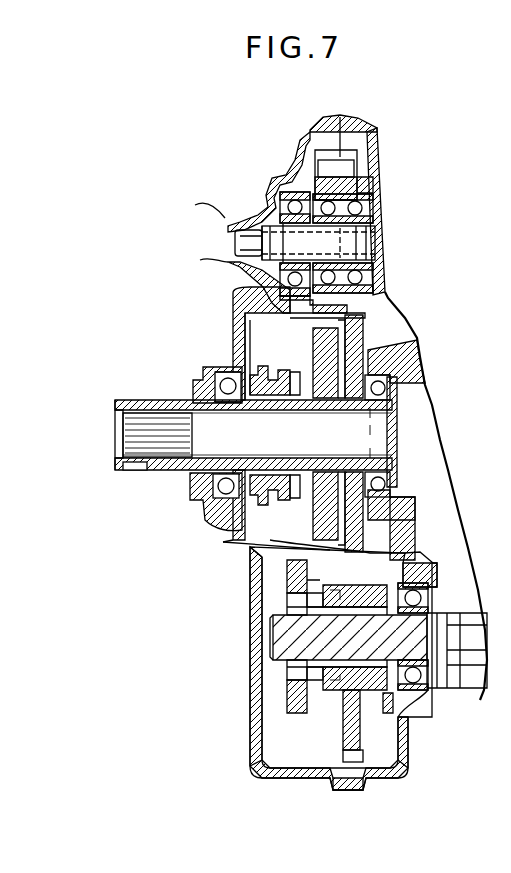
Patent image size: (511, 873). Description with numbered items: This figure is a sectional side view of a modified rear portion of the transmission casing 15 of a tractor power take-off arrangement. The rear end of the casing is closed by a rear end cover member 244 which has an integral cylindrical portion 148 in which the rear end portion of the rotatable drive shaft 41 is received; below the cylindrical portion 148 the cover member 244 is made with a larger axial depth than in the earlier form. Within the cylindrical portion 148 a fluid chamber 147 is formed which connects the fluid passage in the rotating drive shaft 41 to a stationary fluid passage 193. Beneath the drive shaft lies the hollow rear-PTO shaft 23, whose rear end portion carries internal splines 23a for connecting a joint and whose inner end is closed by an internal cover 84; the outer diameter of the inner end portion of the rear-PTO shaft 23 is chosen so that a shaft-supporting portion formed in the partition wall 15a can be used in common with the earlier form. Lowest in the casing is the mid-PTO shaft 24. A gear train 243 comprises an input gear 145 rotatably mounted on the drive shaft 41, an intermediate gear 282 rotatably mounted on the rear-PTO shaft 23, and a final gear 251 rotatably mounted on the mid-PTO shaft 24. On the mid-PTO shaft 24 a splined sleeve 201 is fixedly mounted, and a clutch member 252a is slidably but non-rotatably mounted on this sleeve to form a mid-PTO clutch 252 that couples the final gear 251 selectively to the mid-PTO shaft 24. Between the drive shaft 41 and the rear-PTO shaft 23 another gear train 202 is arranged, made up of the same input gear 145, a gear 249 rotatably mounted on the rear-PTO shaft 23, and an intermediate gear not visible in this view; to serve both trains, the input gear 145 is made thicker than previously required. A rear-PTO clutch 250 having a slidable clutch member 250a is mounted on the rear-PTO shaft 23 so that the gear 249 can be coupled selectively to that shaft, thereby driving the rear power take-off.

The transmission casing 15 is at (364, 120).
The partition wall 15a is at (408, 500).
The rear-PTO shaft 23 is at (165, 482).
The internal splines 23a is at (148, 403).
The mid-PTO shaft 24 is at (466, 688).
The drive shaft 41 is at (383, 232).
The internal cover 84 is at (398, 420).
The input gear 145 is at (326, 150).
The fluid chamber 147 is at (235, 198).
The cylindrical portion 148 is at (240, 258).
The stationary fluid passage 193 is at (243, 238).
The splined sleeve 201 is at (290, 620).
The gear train 202 is at (262, 300).
The gear train 243 is at (383, 328).
The rear end cover member 244 is at (236, 545).
The gear 249 is at (320, 342).
The rear-PTO clutch 250 is at (258, 540).
The clutch member 250a is at (240, 375).
The final gear 251 is at (355, 785).
The mid-PTO clutch 252 is at (310, 740).
The clutch member 252a is at (285, 700).
The intermediate gear 282 is at (390, 570).